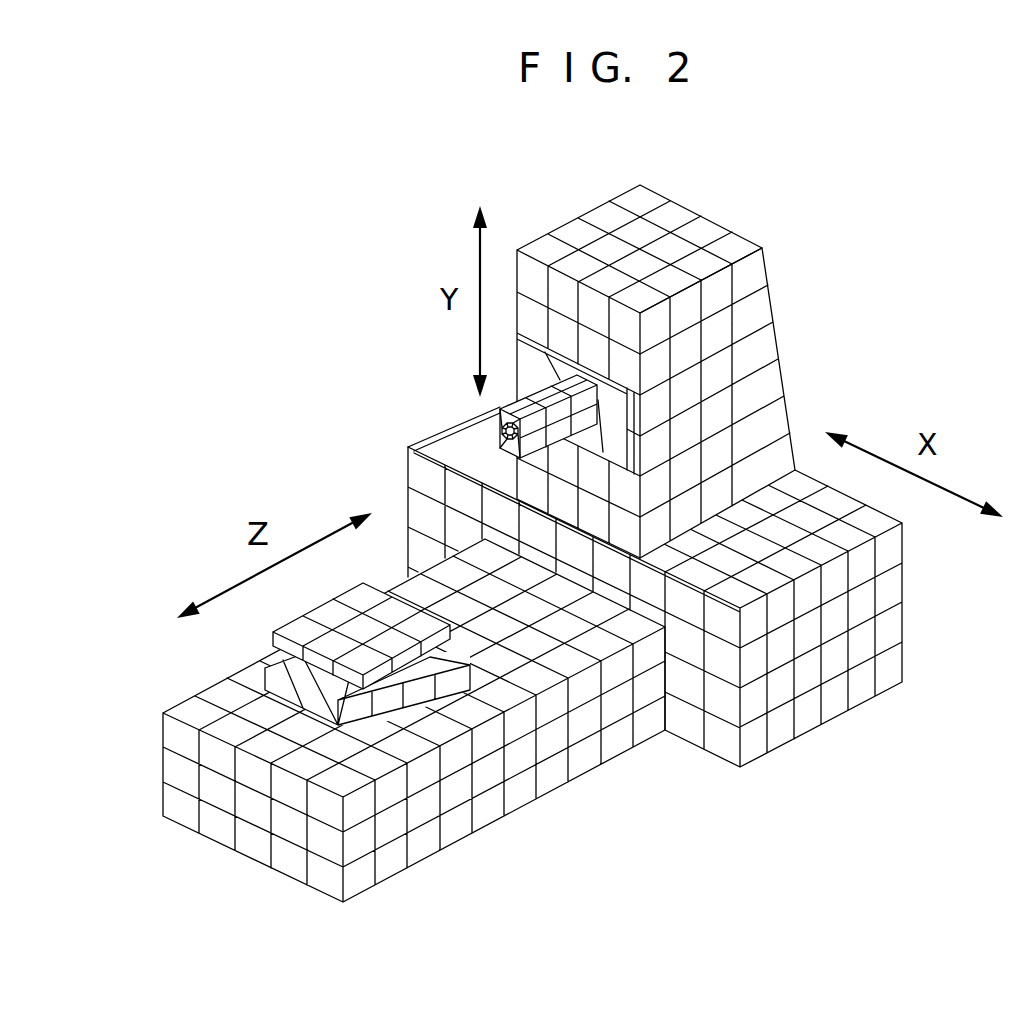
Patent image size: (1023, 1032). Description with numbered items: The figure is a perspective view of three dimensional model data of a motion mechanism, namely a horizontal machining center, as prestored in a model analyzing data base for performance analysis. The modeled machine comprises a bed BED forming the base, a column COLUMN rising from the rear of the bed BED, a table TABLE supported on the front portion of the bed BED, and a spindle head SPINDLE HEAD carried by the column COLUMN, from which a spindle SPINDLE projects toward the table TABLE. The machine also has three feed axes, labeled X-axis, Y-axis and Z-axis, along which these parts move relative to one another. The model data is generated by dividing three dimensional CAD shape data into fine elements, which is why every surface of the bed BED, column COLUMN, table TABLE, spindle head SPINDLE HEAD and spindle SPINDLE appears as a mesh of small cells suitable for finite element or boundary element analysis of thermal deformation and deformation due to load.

The bed BED is at (690, 737).
The column COLUMN is at (776, 335).
The spindle head SPINDLE HEAD is at (500, 410).
The spindle SPINDLE is at (502, 432).
The table TABLE is at (272, 640).